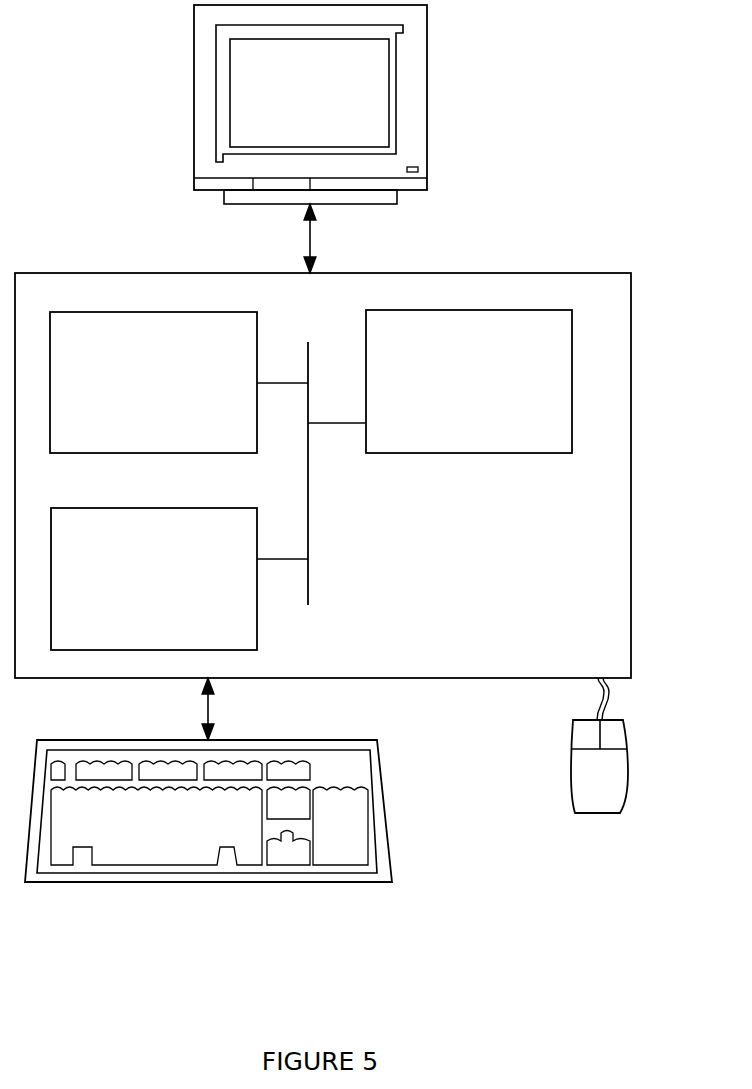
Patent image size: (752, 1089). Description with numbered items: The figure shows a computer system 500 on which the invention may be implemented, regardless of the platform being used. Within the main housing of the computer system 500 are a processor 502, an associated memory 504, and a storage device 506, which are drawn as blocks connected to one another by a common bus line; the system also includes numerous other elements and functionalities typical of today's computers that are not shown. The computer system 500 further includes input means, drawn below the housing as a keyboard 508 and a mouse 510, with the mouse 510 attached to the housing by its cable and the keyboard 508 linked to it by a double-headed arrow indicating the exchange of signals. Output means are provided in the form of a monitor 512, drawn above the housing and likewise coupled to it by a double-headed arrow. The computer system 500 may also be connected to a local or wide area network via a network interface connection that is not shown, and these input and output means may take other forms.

The computer system 500 is at (612, 154).
The processor 502 is at (465, 392).
The memory 504 is at (135, 392).
The storage device 506 is at (132, 591).
The keyboard 508 is at (127, 846).
The mouse 510 is at (581, 786).
The monitor 512 is at (291, 105).